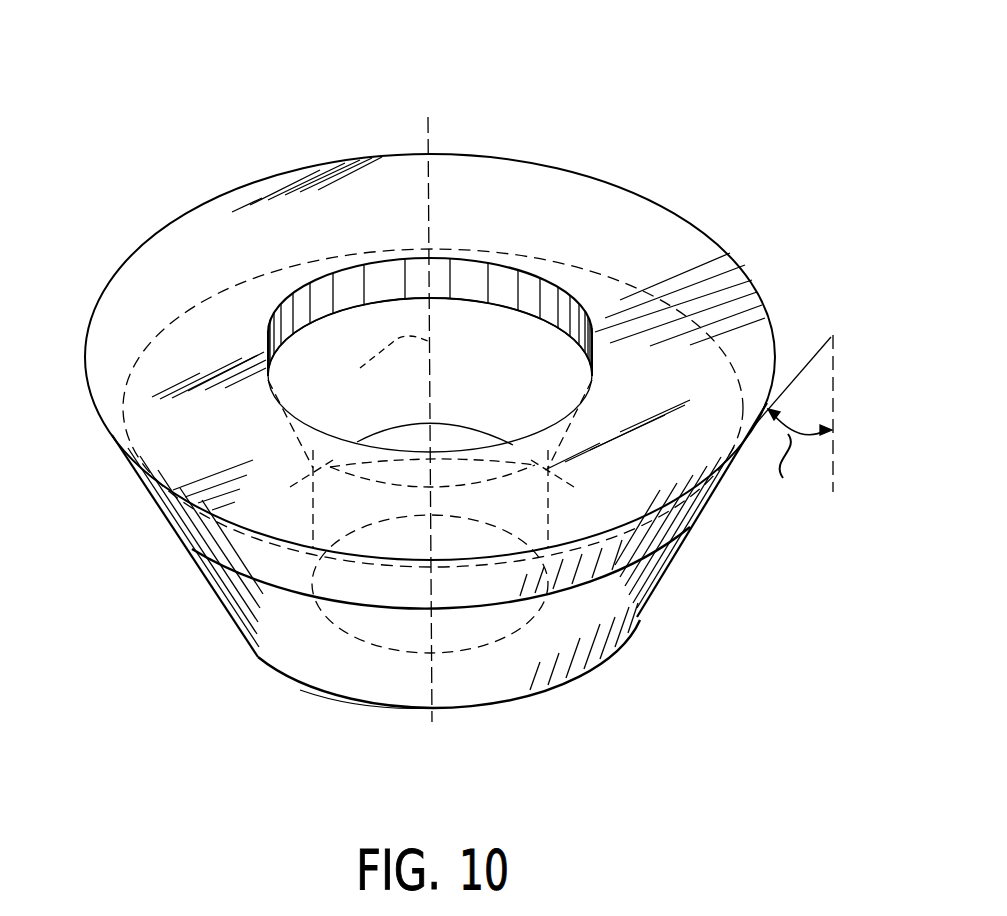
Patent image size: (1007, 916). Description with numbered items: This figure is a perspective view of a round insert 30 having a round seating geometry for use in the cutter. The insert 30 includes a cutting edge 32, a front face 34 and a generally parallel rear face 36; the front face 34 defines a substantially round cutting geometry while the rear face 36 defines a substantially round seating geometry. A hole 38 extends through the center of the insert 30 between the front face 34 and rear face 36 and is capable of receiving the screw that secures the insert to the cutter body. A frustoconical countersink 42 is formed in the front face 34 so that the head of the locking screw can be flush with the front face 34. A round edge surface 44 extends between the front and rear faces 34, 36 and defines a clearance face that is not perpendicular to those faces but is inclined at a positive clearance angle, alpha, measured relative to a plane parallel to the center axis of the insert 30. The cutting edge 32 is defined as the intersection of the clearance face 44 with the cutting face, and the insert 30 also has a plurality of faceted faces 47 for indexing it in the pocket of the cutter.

The round insert 30 is at (214, 162).
The cutting edge 32 is at (640, 193).
The front face 34 is at (173, 355).
The rear face 36 is at (328, 668).
The hole 38 is at (504, 290).
The frustoconical countersink 42 is at (706, 354).
The round edge surface (clearance face) 44 is at (228, 553).
The faceted faces 47 is at (276, 577).